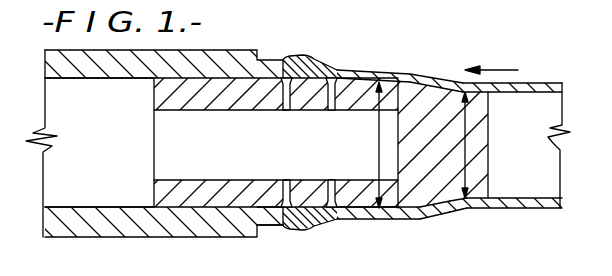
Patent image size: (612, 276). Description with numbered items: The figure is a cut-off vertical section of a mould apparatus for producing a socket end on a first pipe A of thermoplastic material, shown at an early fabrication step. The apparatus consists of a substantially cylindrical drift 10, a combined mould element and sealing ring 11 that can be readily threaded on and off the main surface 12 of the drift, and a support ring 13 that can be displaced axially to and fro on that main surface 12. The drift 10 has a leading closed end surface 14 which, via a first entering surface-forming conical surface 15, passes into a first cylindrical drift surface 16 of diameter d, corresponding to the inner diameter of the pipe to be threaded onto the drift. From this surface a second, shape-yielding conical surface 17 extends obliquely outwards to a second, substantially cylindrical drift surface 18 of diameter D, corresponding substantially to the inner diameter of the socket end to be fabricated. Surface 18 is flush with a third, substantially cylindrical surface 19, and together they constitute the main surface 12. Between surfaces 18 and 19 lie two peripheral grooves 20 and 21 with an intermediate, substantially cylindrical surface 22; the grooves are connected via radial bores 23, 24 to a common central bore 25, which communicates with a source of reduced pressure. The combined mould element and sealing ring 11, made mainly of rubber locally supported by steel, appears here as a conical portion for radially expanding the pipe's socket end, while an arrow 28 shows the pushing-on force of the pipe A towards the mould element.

The drift 10 is at (414, 104).
The combined mould element and sealing ring 11 is at (311, 56).
The main surface of the drift 12 is at (378, 100).
The support ring 13 is at (220, 67).
The leading closed end surface 14 is at (490, 166).
The first entering surface-forming conical surface 15 is at (493, 210).
The first cylindrical drift surface 16 is at (458, 212).
The second shape-yielding conical surface 17 is at (424, 218).
The second substantially cylindrical drift surface 18 is at (372, 222).
The third substantially cylindrical surface 19 is at (196, 224).
The peripheral groove 20 is at (334, 214).
The peripheral groove 21 is at (272, 229).
The intermediate substantially cylindrical surface 22 is at (318, 229).
The radial bores 23 is at (341, 97).
The radial bores 24 is at (266, 108).
The central bore 25 is at (163, 135).
The arrow 28 is at (521, 68).
The first pipe A is at (539, 75).
The diameter of second cylindrical drift surface D is at (388, 145).
The diameter of first cylindrical drift surface d is at (465, 145).